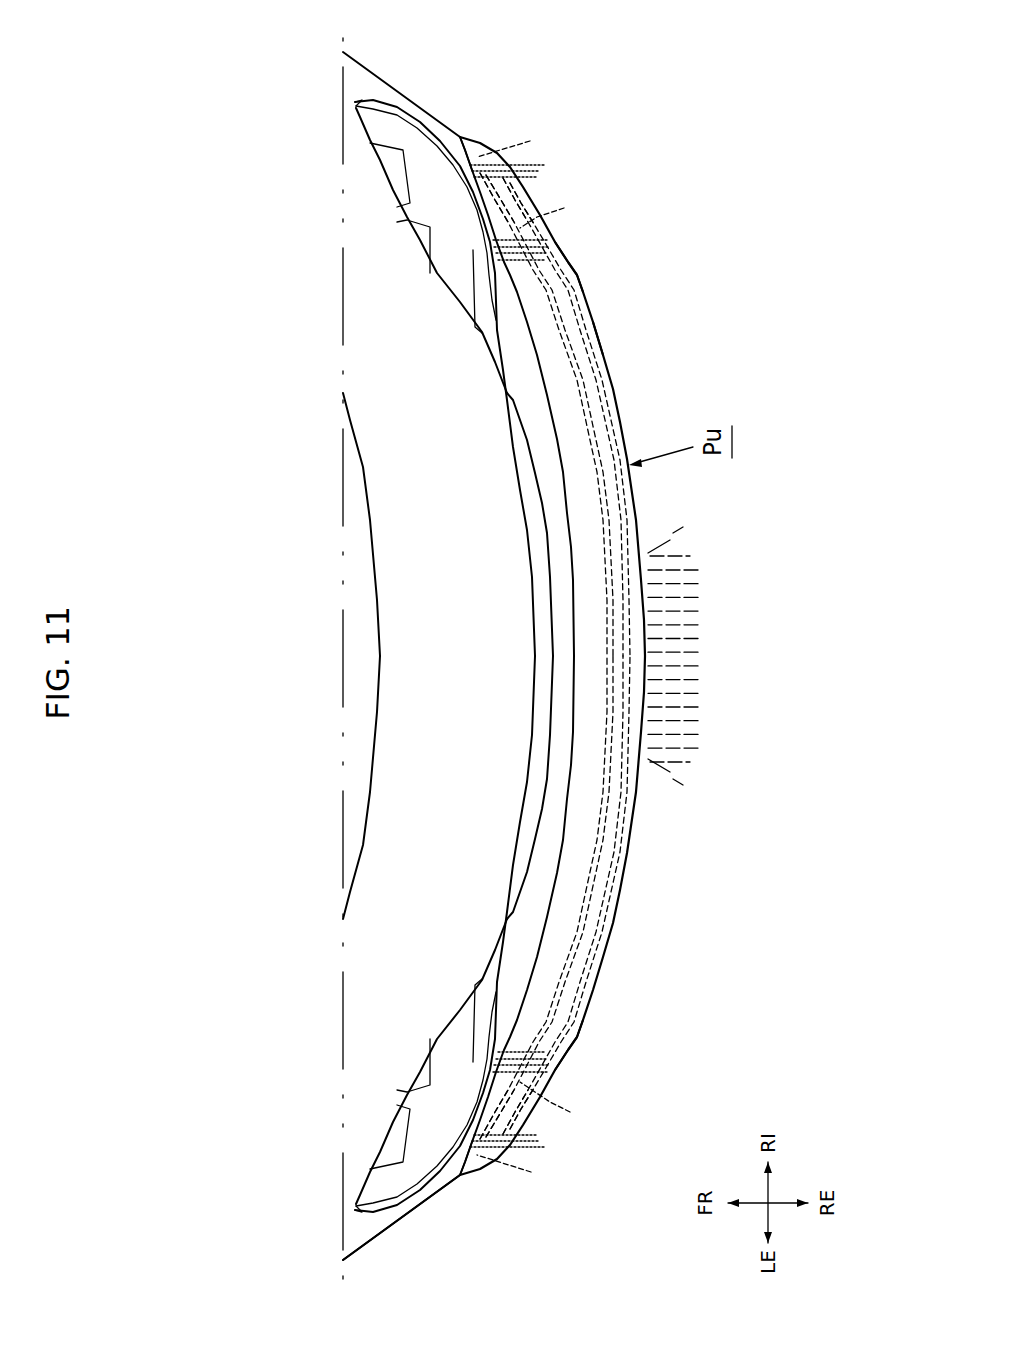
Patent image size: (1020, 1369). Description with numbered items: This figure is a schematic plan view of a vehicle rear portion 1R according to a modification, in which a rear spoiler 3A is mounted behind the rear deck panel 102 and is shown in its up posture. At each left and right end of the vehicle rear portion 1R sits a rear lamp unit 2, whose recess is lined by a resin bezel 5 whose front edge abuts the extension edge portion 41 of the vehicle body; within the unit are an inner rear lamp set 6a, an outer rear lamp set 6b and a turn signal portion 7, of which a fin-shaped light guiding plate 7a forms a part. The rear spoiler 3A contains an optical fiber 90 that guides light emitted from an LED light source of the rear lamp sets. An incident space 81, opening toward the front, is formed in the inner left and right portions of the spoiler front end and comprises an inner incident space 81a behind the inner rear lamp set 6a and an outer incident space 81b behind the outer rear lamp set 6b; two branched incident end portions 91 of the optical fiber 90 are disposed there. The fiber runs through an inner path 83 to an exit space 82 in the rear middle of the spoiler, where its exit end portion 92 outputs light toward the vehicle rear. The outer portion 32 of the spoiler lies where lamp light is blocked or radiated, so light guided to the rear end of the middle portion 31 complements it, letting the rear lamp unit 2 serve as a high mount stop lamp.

The vehicle rear portion 1R is at (670, 1008).
The rear lamp unit 2 is at (462, 140).
The rear spoiler 3A is at (637, 869).
The bezel 5 is at (460, 302).
The inner rear lamp set 6a is at (453, 270).
The outer rear lamp set 6b is at (410, 176).
The turn signal portion 7 is at (418, 123).
The fin-shaped light guiding plate 7a is at (392, 106).
The middle portion 31 is at (573, 707).
The outer portion 32 is at (578, 272).
The extension edge portion 41 is at (481, 334).
The incident space 81 is at (583, 176).
The inner incident space 81a is at (548, 243).
The outer incident space 81b is at (500, 1147).
The exit space 82 is at (648, 762).
The inner path 83 is at (601, 342).
The optical fiber 90 is at (609, 410).
The incident end portion 91 is at (536, 655).
The exit end portion 92 is at (627, 603).
The rear deck panel 102 is at (367, 408).